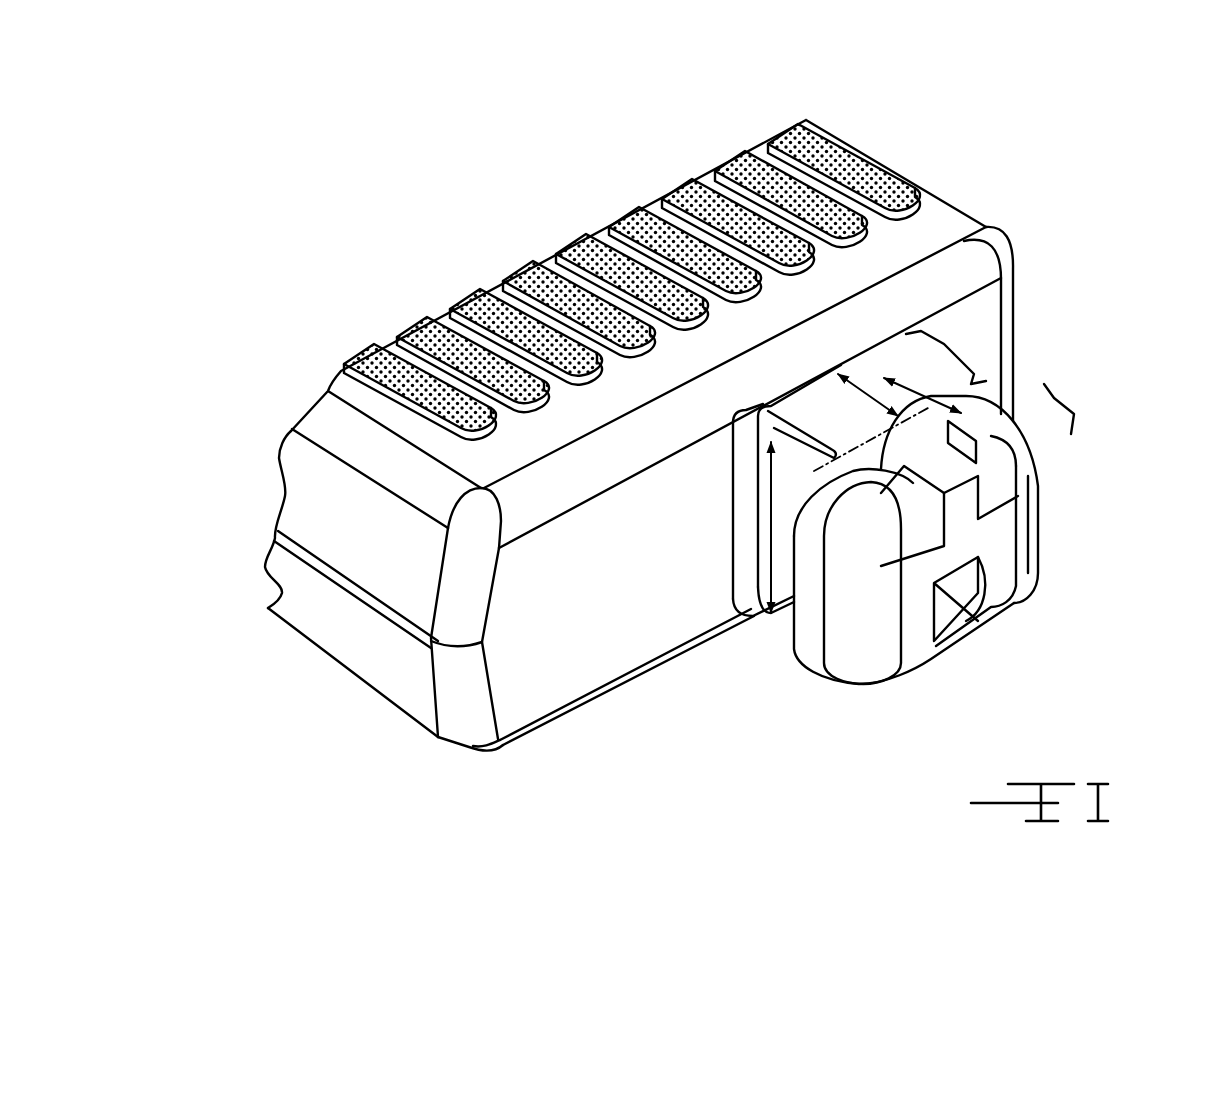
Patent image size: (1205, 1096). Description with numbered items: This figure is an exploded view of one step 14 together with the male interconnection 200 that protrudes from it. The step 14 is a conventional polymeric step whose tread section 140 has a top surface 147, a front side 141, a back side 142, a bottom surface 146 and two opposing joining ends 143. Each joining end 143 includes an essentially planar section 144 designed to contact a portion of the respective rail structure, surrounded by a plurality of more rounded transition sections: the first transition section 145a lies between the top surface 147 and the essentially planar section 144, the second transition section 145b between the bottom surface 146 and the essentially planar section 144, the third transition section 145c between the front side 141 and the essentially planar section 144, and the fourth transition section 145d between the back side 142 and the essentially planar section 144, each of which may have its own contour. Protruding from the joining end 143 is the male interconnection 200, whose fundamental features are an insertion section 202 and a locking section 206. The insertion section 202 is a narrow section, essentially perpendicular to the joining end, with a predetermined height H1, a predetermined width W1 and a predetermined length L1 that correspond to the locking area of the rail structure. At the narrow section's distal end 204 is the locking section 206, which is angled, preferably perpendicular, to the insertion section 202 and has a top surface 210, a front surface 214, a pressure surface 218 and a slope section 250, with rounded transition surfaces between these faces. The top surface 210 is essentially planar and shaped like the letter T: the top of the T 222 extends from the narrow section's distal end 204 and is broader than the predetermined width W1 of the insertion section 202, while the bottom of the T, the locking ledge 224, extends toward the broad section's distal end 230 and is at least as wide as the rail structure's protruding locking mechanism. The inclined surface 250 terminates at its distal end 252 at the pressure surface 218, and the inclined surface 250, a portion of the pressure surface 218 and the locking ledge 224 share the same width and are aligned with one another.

The step 14 is at (700, 156).
The tread section 140 is at (840, 113).
The front side 141 is at (333, 632).
The back side 142 is at (1013, 298).
The joining end 143 is at (545, 665).
The essentially planar section 144 is at (627, 579).
The first transition section 145a is at (676, 445).
The second transition section 145b is at (644, 667).
The third transition section 145c is at (458, 597).
The fourth transition section 145d is at (1010, 354).
The bottom surface 146 is at (480, 758).
The top surface 147 is at (427, 332).
The male interconnection 200 is at (1052, 532).
The insertion section 202 is at (1012, 318).
The distal end of narrow section 204 is at (906, 382).
The locking section 206 is at (1047, 383).
The top surface 210 is at (917, 457).
The front surface 214 is at (808, 615).
The pressure surface 218 is at (970, 543).
The top of the T 222 is at (860, 552).
The locking ledge 224 is at (1017, 410).
The distal end of broad section 230 is at (1012, 456).
The inclined surface 250 is at (958, 613).
The distal end of inclined surface 252 is at (995, 605).
The predetermined height H1 is at (766, 476).
The predetermined width W1 is at (798, 418).
The predetermined length L1 is at (858, 385).